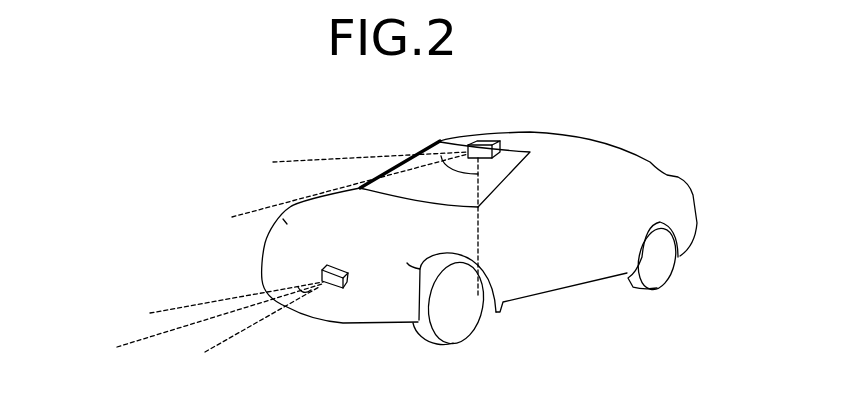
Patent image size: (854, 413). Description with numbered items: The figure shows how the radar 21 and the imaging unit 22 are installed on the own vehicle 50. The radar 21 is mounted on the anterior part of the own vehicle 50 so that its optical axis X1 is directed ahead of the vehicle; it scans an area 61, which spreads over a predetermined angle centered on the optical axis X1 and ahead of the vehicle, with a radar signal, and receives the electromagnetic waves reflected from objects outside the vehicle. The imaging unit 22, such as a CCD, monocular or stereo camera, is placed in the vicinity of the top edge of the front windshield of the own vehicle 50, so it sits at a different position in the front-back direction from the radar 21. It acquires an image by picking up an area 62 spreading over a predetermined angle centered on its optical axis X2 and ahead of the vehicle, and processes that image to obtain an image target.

The own vehicle 50 is at (597, 138).
The radar 21 is at (348, 282).
The imaging unit 22 is at (482, 141).
The area 61 is at (167, 310).
The area 62 is at (293, 161).
The optical axis X1 is at (201, 326).
The optical axis X2 is at (332, 194).